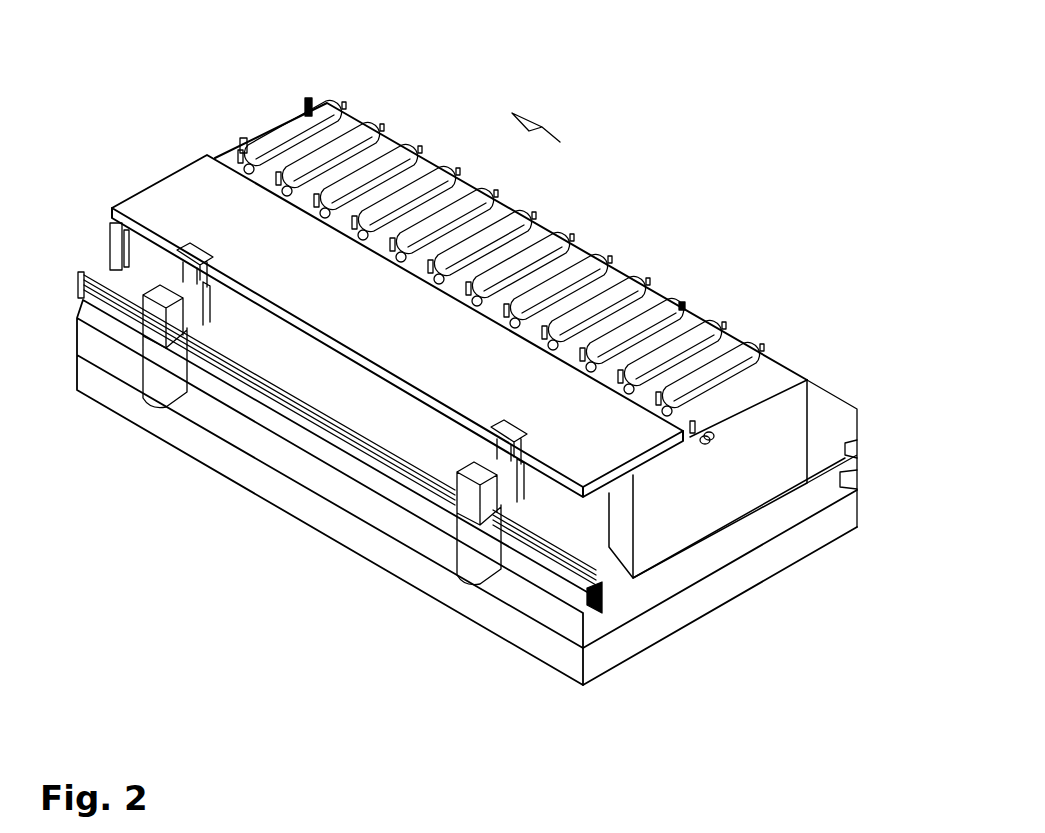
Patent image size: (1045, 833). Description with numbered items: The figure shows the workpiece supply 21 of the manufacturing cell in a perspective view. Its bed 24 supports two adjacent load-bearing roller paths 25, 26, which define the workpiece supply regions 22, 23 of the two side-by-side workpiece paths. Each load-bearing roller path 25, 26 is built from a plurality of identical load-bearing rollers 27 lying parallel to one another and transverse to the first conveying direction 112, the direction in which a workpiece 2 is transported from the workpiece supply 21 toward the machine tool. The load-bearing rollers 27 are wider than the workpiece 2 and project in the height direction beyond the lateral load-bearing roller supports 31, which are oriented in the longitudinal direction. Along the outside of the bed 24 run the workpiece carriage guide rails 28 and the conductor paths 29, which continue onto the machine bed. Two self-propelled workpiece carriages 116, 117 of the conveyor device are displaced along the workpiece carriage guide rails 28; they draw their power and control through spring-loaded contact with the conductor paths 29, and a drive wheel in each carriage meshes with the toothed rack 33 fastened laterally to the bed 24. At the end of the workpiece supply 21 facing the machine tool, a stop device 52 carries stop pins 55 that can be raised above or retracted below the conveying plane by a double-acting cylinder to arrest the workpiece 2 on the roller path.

The workpiece 2 is at (325, 301).
The workpiece supply 21 is at (413, 597).
The workpiece supply region 22 is at (728, 428).
The workpiece supply region 23 is at (627, 485).
The bed 24 is at (363, 531).
The load-bearing roller path 25 is at (394, 158).
The load-bearing roller path 26 is at (670, 457).
The load-bearing roller 27 is at (682, 302).
The workpiece carriage guide rail 28 is at (508, 508).
The conductor path 29 is at (601, 614).
The lateral load-bearing roller support 31 is at (788, 410).
The toothed rack 33 is at (240, 382).
The stop device 52 is at (242, 137).
The stop pin 55 is at (309, 99).
The first conveying direction 112 is at (548, 134).
The workpiece carriage 116 is at (466, 578).
The workpiece carriage 117 is at (158, 398).